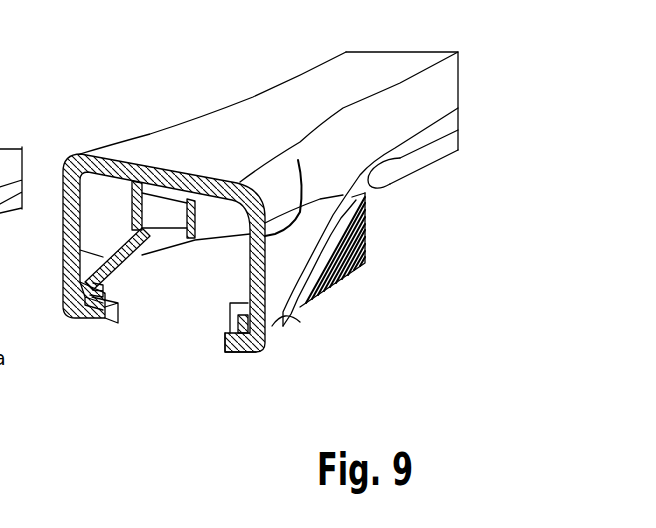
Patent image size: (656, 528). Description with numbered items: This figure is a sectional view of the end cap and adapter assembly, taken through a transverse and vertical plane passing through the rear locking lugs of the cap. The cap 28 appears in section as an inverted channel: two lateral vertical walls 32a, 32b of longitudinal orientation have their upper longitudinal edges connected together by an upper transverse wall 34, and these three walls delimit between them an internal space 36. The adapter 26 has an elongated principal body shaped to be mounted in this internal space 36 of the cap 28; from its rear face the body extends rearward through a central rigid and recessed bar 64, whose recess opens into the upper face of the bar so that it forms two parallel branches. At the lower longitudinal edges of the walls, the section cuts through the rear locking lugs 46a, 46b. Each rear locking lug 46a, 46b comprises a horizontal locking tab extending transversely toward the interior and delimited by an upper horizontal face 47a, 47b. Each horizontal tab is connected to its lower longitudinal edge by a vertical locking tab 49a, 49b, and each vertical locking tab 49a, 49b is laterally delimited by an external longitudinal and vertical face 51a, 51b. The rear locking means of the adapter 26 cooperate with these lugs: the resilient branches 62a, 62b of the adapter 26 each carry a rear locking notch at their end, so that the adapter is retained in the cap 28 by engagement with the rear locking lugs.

The cap 28 is at (368, 45).
The lateral vertical wall 32a is at (298, 160).
The lateral vertical wall 32b is at (62, 237).
The upper transverse wall 34 is at (200, 188).
The internal space 36 is at (164, 253).
The central rigid and recessed bar 64 is at (157, 207).
The external longitudinal and vertical face 51a is at (230, 312).
The external longitudinal and vertical face 51b is at (103, 257).
The resilient branch 62a is at (370, 220).
The resilient branch 62b is at (130, 255).
The adapter 26 is at (322, 303).
The rear locking lug 46a is at (240, 347).
The rear locking lug 46b is at (90, 318).
The upper horizontal face 47a is at (224, 333).
The upper horizontal face 47b is at (120, 290).
The vertical locking tab 49a is at (274, 324).
The vertical locking tab 49b is at (85, 280).